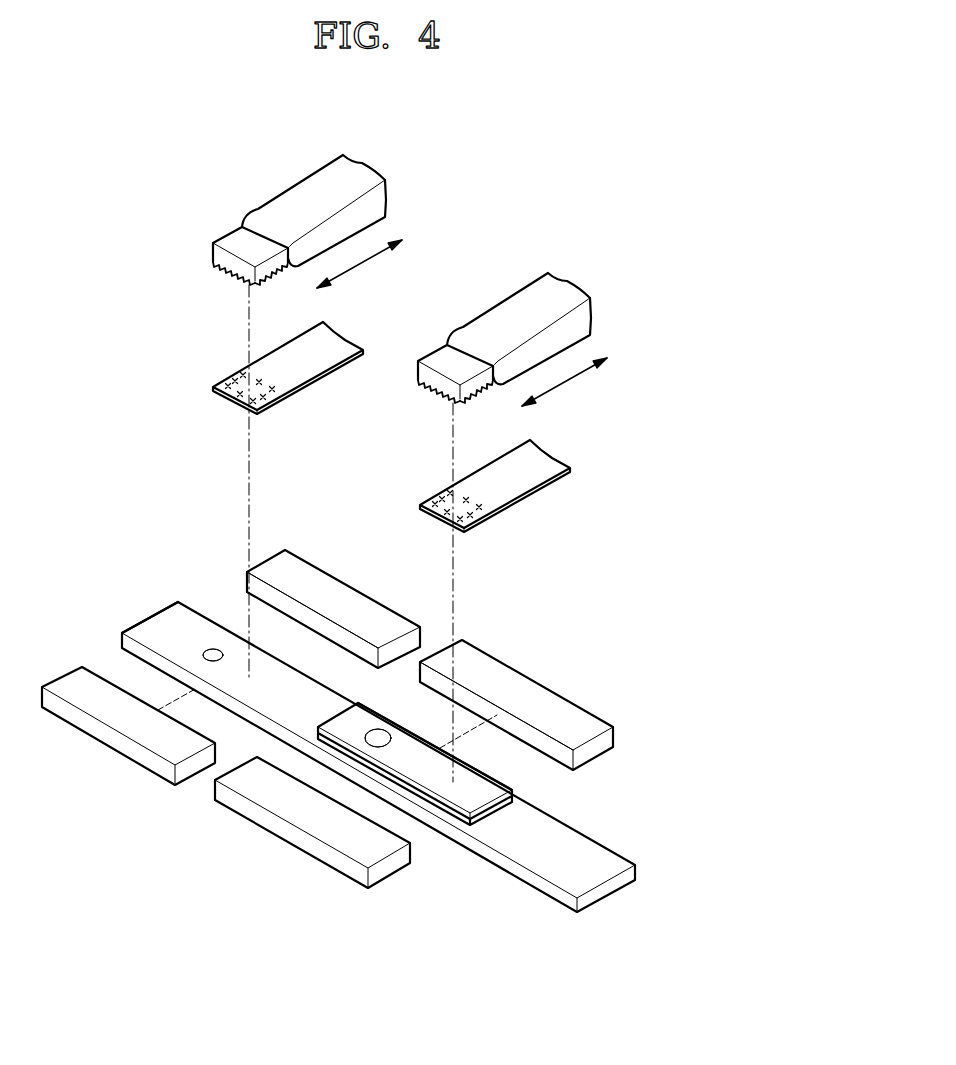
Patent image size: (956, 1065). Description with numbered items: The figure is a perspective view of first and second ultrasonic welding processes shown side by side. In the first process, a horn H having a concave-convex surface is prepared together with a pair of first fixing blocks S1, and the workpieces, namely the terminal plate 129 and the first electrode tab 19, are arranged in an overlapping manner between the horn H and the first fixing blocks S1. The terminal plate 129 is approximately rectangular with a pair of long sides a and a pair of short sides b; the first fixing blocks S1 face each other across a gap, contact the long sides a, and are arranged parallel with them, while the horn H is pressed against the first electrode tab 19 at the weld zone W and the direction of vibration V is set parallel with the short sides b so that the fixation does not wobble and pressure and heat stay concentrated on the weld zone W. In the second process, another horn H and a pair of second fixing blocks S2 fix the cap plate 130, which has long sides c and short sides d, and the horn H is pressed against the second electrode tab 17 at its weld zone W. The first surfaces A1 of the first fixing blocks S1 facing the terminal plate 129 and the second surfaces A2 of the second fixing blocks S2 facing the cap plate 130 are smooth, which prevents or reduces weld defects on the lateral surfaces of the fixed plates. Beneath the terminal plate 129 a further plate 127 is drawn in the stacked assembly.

The horn H is at (300, 190).
The direction of vibration V is at (462, 328).
The weld zone W is at (263, 407).
The second electrode tab 17 is at (315, 358).
The first electrode tab 19 is at (522, 476).
The first lead plate (lower) 127 is at (500, 808).
The terminal plate 129 is at (497, 790).
The cap plate 130 is at (598, 878).
The first fixing blocks S1 is at (493, 673).
The second fixing blocks S2 is at (128, 735).
The first surfaces A1 is at (543, 740).
The second surfaces A2 is at (280, 600).
The long sides a is at (405, 723).
The short sides b is at (337, 712).
The long sides c is at (222, 628).
The short sides d is at (153, 618).